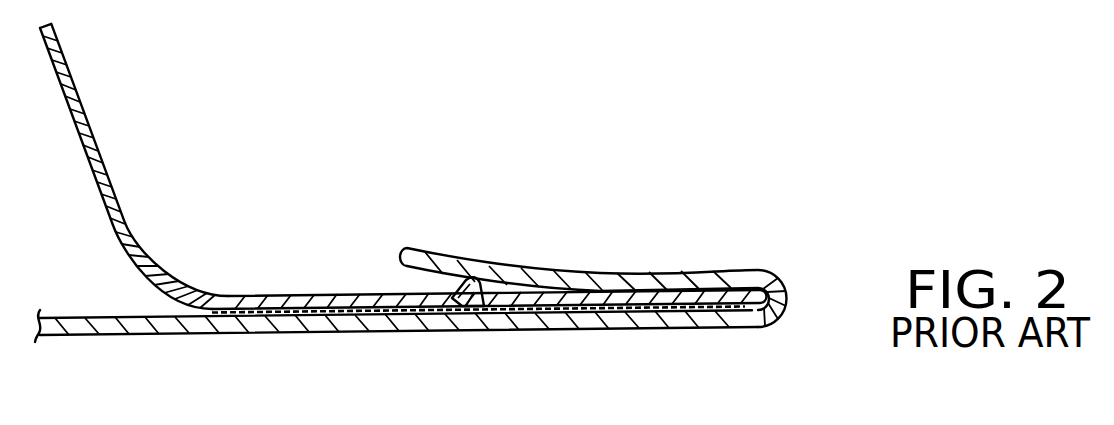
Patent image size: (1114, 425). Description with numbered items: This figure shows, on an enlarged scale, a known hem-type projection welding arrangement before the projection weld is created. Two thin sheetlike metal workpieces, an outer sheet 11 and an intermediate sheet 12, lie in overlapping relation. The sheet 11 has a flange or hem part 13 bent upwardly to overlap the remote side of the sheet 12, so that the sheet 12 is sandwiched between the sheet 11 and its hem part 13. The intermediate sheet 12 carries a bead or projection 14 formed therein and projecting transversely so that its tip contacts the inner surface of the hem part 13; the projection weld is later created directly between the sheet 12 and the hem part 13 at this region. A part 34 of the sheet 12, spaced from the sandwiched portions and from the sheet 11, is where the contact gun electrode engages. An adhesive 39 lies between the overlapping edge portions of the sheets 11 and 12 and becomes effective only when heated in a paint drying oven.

The sheet 11 is at (372, 318).
The sheet 12 is at (307, 295).
The hem part 13 is at (623, 275).
The projection 14 is at (440, 290).
The part of the intermediate sheet 34 is at (56, 54).
The adhesive 39 is at (245, 313).